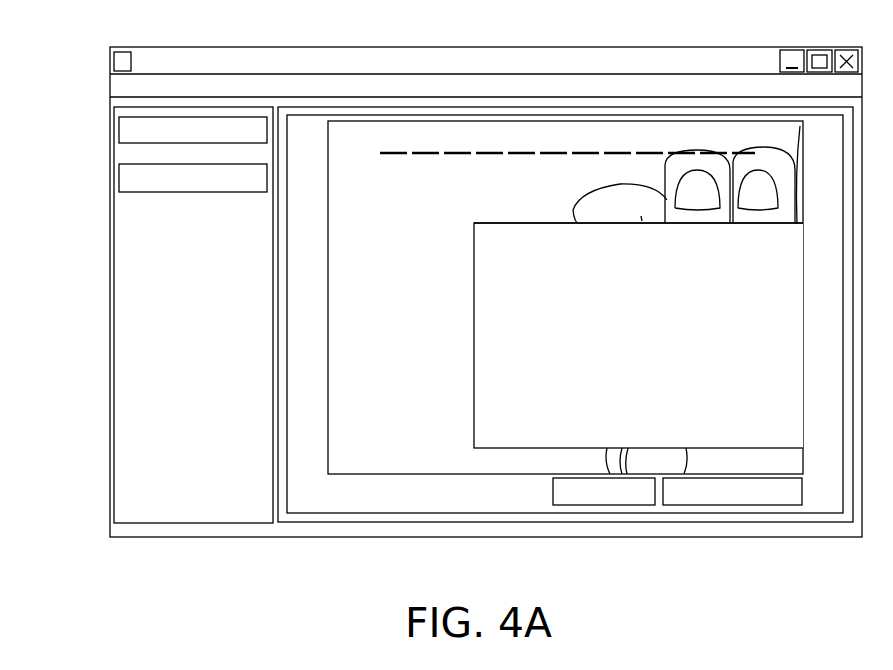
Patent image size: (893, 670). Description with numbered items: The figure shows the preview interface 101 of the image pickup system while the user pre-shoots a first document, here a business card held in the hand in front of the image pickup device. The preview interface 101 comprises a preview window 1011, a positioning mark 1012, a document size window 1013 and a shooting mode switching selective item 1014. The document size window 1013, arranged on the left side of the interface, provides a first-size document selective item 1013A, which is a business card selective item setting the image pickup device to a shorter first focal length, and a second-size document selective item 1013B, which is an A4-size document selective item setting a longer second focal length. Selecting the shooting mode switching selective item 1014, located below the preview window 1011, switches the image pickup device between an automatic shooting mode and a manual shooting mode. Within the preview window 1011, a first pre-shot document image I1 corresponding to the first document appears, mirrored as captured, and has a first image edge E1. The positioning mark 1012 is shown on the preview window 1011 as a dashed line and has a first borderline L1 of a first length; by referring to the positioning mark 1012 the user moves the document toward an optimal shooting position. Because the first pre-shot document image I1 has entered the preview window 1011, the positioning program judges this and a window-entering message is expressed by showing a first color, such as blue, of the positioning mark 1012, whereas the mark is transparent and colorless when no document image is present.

The preview interface 101 is at (672, 88).
The preview window 1011 is at (427, 446).
The positioning mark 1012 is at (700, 153).
The document size window 1013 is at (140, 314).
The first-size document selective item 1013A is at (135, 133).
The second-size document selective item 1013B is at (122, 173).
The shooting mode switching selective item 1014 is at (788, 505).
The first pre-shot document image I1 is at (515, 418).
The first image edge E1 is at (540, 222).
The first borderline L1 is at (582, 153).